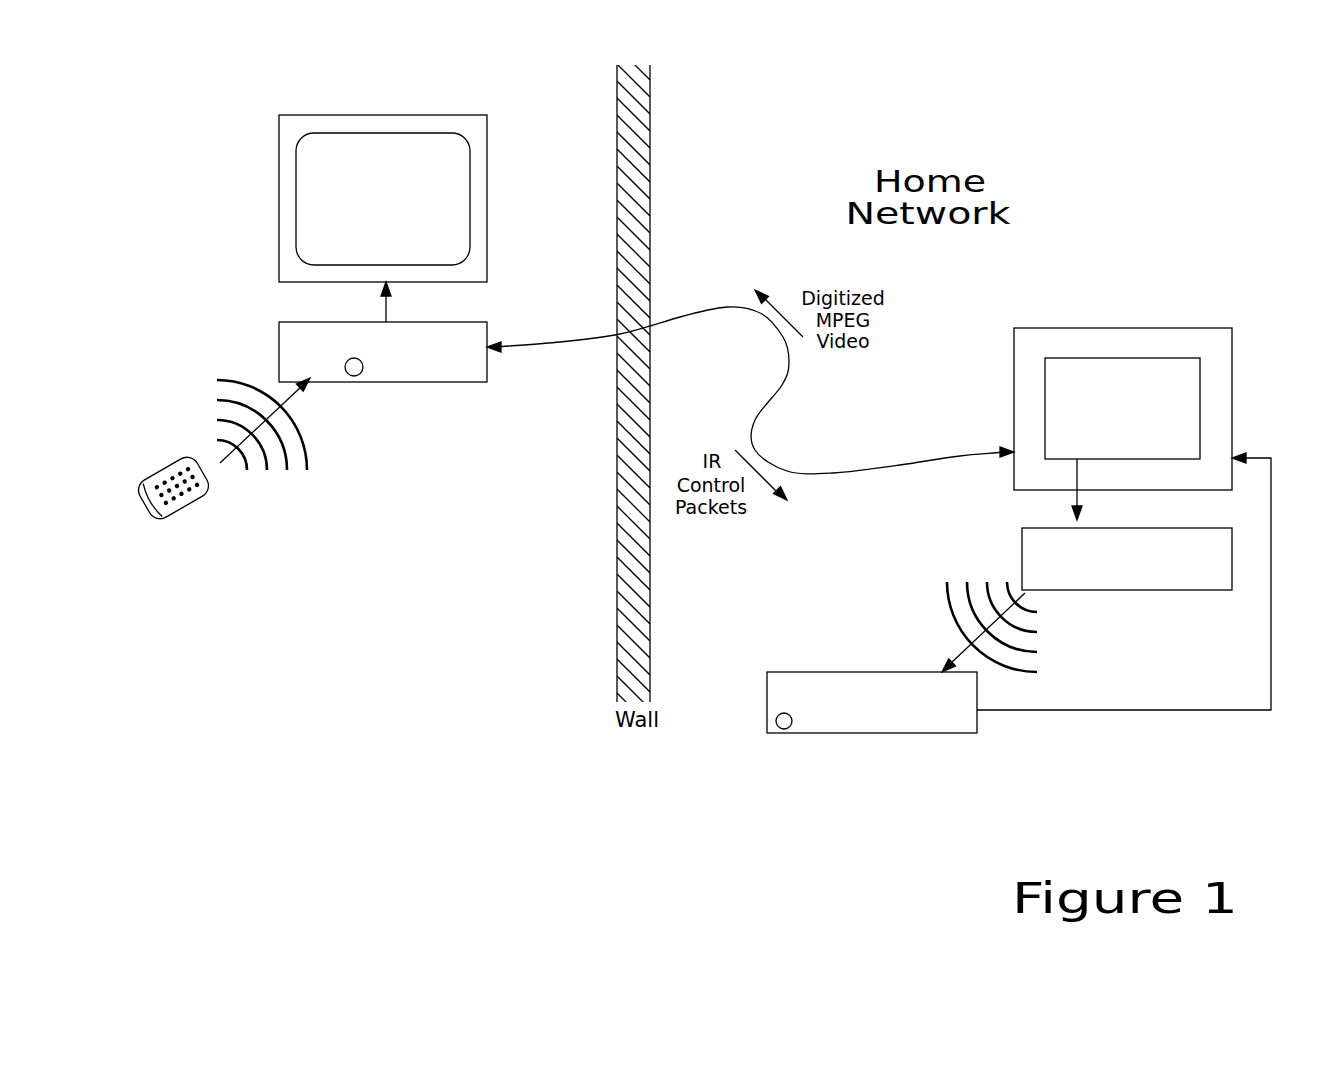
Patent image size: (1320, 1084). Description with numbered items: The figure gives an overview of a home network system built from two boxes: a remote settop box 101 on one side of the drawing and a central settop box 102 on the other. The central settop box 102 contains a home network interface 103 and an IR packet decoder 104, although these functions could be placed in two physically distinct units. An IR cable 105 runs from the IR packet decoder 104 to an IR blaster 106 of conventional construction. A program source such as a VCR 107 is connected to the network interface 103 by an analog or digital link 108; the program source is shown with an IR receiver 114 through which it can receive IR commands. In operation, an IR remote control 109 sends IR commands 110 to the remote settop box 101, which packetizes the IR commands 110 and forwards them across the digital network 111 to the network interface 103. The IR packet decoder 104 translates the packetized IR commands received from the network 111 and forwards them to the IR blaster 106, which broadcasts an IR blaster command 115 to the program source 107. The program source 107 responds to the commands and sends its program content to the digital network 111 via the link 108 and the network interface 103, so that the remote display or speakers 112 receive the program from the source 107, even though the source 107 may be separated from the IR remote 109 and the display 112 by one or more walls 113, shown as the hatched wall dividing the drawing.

The remote settop box 101 is at (437, 382).
The central settop box 102 is at (1123, 379).
The home network interface 103 is at (1123, 409).
The IR packet decoder 104 is at (1122, 408).
The IR cable 105 is at (1063, 515).
The IR blaster 106 is at (1020, 555).
The VCR 107 is at (872, 702).
The analog or digital link 108 is at (1128, 710).
The IR remote control 109 is at (217, 490).
The IR commands 110 is at (217, 393).
The digital network 111 is at (683, 318).
The remote display or speakers 112 is at (488, 162).
The walls 113 is at (650, 672).
The IR receiver 114 is at (768, 732).
The IR blaster command 115 is at (945, 600).